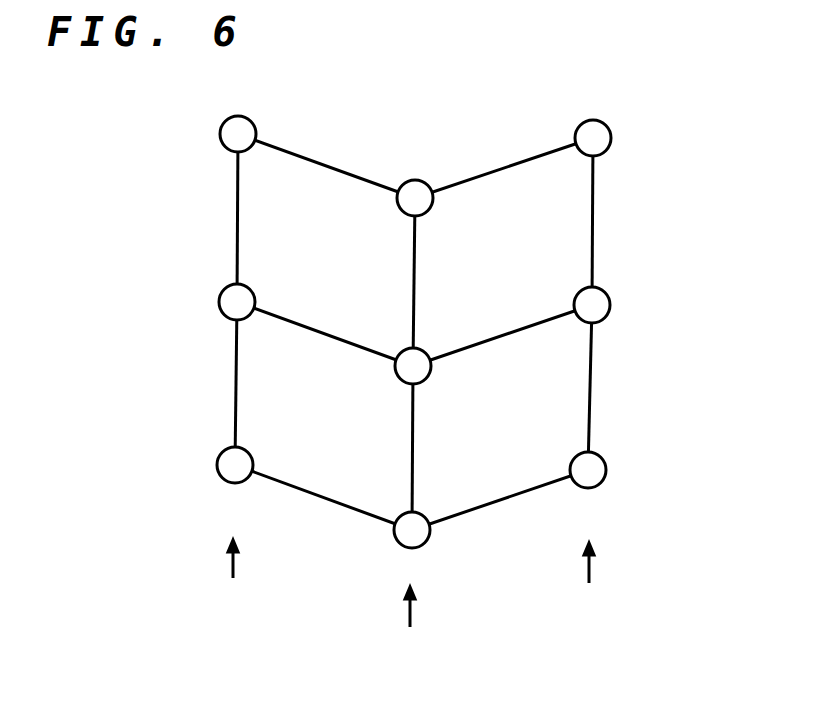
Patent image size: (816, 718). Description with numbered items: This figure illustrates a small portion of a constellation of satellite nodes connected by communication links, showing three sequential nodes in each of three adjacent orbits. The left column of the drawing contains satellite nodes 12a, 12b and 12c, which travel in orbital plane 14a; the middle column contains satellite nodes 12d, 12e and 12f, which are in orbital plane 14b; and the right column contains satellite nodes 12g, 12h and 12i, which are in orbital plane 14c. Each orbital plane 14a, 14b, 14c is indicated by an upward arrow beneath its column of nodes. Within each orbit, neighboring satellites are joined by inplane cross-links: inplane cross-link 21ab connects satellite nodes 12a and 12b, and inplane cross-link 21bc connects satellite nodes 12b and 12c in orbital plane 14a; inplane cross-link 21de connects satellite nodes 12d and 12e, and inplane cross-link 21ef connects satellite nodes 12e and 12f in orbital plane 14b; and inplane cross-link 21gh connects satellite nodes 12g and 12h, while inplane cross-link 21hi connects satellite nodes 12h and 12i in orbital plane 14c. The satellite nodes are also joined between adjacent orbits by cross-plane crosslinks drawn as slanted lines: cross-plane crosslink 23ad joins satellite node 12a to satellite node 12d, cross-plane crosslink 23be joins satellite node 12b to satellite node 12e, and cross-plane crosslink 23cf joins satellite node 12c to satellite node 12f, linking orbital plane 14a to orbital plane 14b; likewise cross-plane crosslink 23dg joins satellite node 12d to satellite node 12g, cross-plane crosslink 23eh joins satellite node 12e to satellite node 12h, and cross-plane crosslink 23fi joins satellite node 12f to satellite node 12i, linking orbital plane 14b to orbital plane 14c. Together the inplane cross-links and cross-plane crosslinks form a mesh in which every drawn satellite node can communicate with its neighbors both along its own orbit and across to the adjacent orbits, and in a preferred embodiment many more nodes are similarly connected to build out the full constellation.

The satellite node 12a is at (217, 466).
The satellite node 12b is at (219, 289).
The satellite node 12c is at (221, 126).
The satellite node 12d is at (428, 542).
The satellite node 12e is at (430, 379).
The satellite node 12f is at (429, 212).
The satellite node 12g is at (607, 469).
The satellite node 12h is at (609, 292).
The satellite node 12i is at (612, 136).
The inplane cross-link 21ab is at (239, 376).
The inplane cross-link 21bc is at (262, 208).
The inplane cross-link 21de is at (414, 458).
The inplane cross-link 21ef is at (416, 294).
The inplane cross-link 21gh is at (594, 403).
The inplane cross-link 21hi is at (619, 207).
The cross-plane crosslink 23ad is at (292, 489).
The cross-plane crosslink 23be is at (327, 334).
The cross-plane crosslink 23cf is at (332, 166).
The cross-plane crosslink 23dg is at (503, 497).
The cross-plane crosslink 23eh is at (537, 326).
The cross-plane crosslink 23fi is at (492, 170).
The orbital plane 14a is at (236, 576).
The orbital plane 14b is at (414, 623).
The orbital plane 14c is at (592, 580).